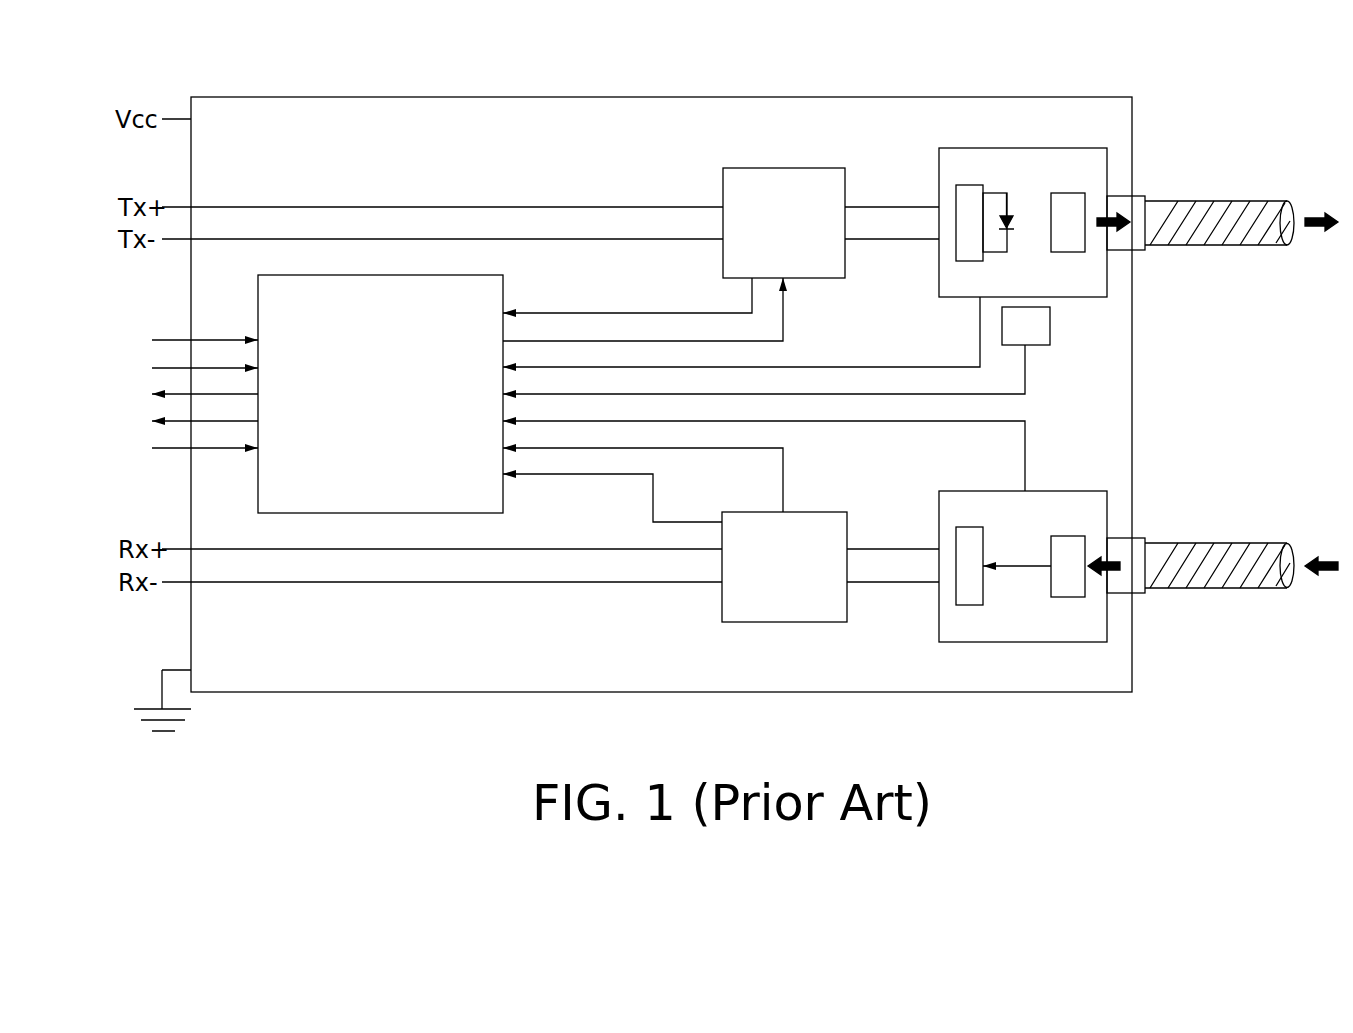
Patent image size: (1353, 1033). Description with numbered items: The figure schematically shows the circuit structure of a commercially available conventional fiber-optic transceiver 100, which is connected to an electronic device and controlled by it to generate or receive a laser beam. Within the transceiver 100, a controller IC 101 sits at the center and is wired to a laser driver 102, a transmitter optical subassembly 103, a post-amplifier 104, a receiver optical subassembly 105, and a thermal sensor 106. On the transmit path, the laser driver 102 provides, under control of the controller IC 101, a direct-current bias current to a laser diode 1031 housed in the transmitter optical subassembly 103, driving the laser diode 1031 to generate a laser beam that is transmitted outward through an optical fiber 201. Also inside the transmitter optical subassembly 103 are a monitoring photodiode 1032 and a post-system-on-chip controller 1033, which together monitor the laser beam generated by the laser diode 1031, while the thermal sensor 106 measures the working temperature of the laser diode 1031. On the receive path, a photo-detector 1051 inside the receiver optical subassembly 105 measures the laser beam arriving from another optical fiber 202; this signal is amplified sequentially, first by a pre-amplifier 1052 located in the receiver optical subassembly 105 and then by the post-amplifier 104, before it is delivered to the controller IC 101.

The fiber-optic transceiver 100 is at (643, 97).
The controller IC 101 is at (365, 297).
The laser driver 102 is at (782, 186).
The transmitter optical subassembly 103 is at (1035, 170).
The laser diode 1031 is at (1068, 203).
The monitoring photodiode 1032 is at (997, 190).
The post-system-on-chip controller 1033 is at (970, 197).
The post-amplifier 104 is at (782, 607).
The receiver optical subassembly 105 is at (1015, 616).
The photo-detector 1051 is at (1067, 587).
The pre-amplifier 1052 is at (972, 592).
The thermal sensor 106 is at (1033, 327).
The optical fiber 201 is at (1240, 210).
The optical fiber 202 is at (1250, 557).